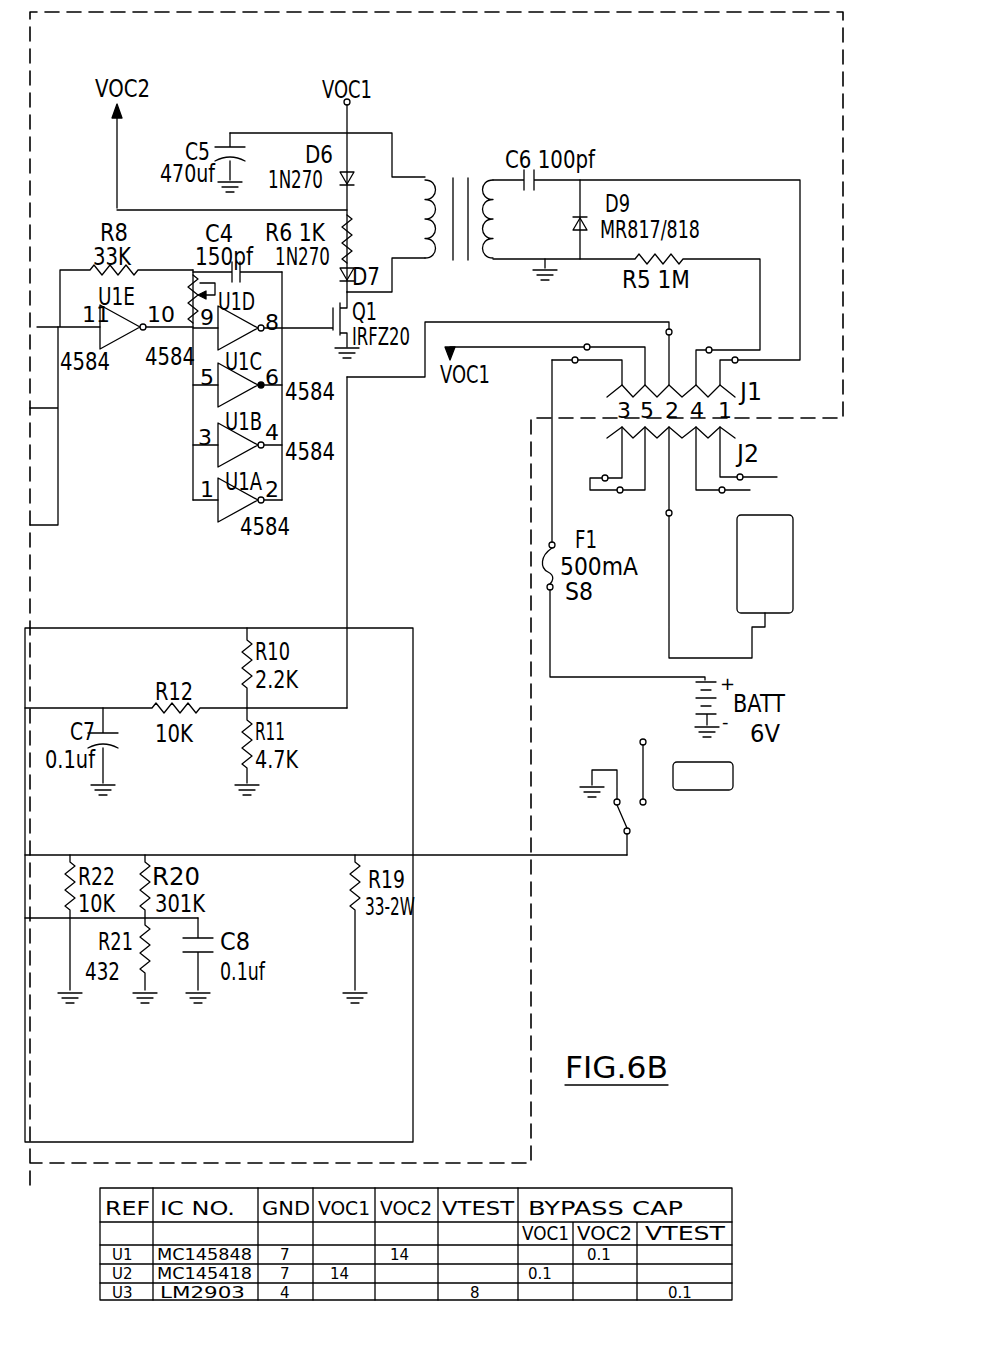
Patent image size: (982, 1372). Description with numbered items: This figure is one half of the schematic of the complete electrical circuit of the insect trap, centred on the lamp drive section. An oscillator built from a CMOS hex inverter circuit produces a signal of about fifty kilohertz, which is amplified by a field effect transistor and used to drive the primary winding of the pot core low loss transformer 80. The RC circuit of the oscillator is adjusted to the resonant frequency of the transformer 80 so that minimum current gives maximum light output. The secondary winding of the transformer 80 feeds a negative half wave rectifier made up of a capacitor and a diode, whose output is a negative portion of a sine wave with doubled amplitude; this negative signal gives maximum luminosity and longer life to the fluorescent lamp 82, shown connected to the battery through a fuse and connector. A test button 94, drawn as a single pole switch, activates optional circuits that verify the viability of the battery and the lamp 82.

The transformer 80 is at (533, 68).
The fluorescent light source 82 is at (745, 585).
The test button 94 is at (636, 852).